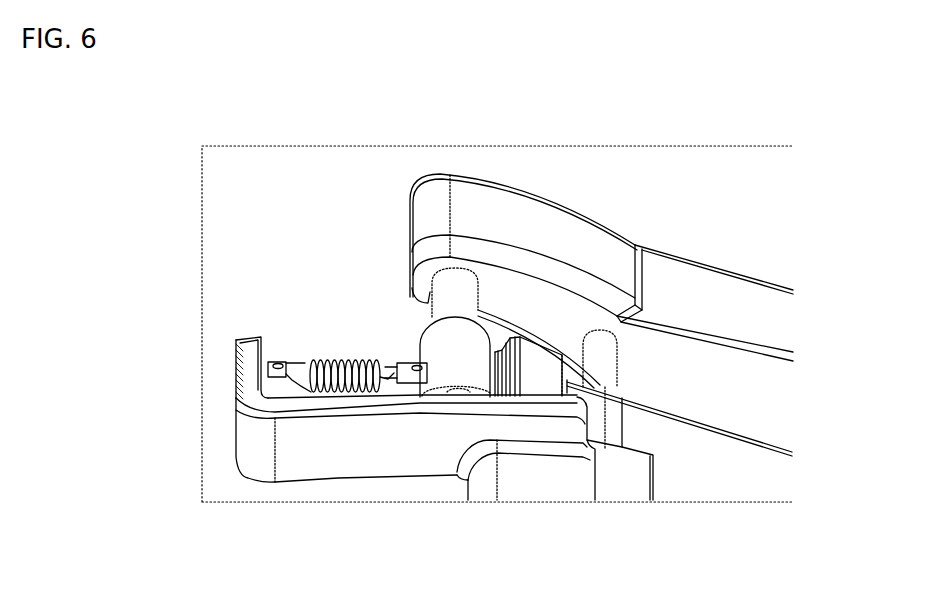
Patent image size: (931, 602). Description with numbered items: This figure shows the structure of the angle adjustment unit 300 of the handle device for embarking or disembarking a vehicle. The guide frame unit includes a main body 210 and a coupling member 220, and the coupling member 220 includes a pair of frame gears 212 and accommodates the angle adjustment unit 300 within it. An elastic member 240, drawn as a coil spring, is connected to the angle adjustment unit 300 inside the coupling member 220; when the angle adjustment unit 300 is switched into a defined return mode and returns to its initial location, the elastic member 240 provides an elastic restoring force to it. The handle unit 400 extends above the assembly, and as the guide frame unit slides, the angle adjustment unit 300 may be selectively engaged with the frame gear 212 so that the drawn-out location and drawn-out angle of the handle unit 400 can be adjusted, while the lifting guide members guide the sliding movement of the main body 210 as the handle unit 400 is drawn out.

The handle unit 400 is at (497, 202).
The frame gear 212 is at (502, 348).
The angle adjustment unit 300 is at (412, 327).
The elastic member 240 is at (320, 360).
The coupling member 220 is at (240, 363).
The main body 210 is at (518, 483).